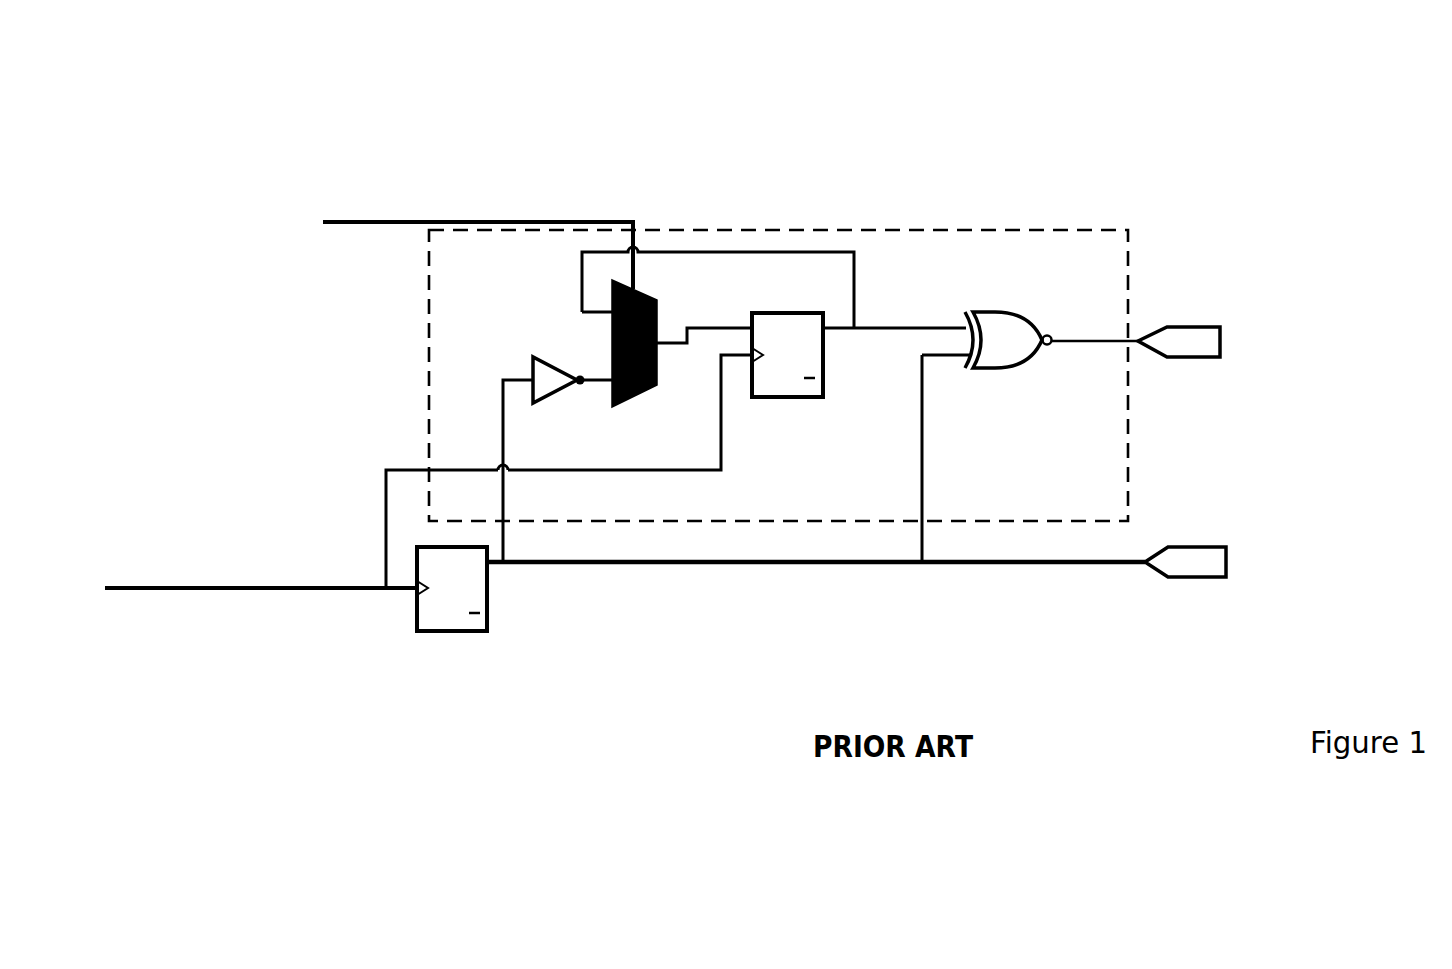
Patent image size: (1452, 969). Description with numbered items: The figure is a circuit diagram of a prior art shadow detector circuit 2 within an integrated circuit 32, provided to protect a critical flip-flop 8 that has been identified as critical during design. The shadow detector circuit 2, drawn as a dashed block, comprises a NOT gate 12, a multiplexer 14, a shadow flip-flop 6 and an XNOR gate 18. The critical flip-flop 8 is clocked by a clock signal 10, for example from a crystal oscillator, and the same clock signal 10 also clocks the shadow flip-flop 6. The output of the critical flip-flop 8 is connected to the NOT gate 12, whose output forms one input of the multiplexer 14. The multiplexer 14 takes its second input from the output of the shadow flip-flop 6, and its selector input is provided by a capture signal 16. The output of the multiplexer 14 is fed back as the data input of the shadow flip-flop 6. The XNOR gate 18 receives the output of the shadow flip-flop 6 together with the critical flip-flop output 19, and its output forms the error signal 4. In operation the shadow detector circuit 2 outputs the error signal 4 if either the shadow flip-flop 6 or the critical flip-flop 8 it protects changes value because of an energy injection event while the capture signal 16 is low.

The shadow detector circuit 2 is at (955, 229).
The error signal 4 is at (1193, 341).
The shadow flip-flop 6 is at (773, 398).
The critical flip-flop 8 is at (470, 631).
The clock signal 10 is at (245, 588).
The NOT gate 12 is at (533, 373).
The multiplexer 14 is at (612, 340).
The capture signal 16 is at (456, 248).
The XNOR gate 18 is at (992, 310).
The critical flip-flop output 19 is at (842, 597).
The integrated circuit 32 is at (1298, 156).